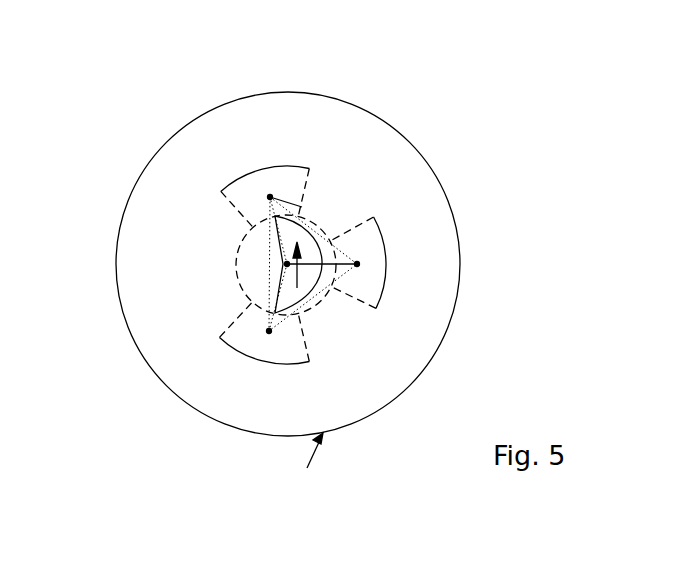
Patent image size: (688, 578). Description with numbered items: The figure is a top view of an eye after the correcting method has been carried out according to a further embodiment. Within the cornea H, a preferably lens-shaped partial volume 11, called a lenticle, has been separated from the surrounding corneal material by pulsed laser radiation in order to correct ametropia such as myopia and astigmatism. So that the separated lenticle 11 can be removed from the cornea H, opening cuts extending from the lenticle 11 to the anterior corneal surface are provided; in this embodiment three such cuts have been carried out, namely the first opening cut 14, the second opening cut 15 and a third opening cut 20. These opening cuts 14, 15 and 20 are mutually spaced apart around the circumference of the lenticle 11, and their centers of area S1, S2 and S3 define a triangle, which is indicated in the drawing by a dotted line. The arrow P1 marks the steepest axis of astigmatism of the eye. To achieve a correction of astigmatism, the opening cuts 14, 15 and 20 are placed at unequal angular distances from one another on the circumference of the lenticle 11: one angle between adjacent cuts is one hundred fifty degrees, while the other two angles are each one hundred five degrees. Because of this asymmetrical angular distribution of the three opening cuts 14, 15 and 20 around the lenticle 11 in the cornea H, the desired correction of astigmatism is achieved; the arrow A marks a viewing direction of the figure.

The cornea H is at (150, 378).
The partial volume 11 is at (235, 268).
The first opening cut 14 is at (293, 167).
The second opening cut 15 is at (383, 289).
The opening cut 20 is at (273, 361).
The center of area S1 is at (305, 207).
The center of area S2 is at (358, 264).
The center of area S3 is at (270, 332).
The axis of astigmatism P1 is at (298, 288).
The viewing direction A is at (310, 467).